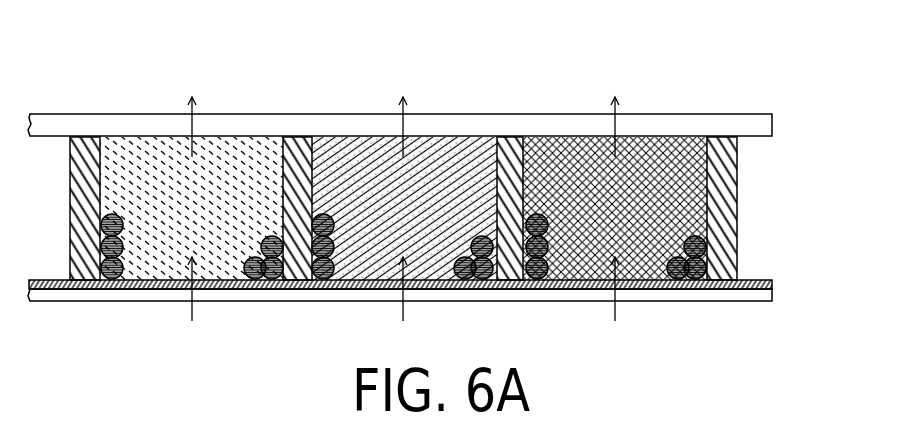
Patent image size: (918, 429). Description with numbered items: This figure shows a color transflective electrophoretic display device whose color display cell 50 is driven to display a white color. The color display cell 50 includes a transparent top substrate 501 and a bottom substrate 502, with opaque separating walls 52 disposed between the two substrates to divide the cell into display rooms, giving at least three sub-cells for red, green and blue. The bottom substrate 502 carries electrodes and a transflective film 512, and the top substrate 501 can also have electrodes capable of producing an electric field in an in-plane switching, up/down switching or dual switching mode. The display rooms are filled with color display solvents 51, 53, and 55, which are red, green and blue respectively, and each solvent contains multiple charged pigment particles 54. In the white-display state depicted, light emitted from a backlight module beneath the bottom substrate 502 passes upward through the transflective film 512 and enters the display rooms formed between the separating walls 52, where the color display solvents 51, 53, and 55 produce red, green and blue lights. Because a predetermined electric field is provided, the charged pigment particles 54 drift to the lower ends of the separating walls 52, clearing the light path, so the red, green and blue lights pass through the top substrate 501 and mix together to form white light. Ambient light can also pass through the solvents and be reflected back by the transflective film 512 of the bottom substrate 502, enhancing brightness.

The color display cell 50 is at (146, 21).
The color display solvent 51 is at (233, 168).
The separating walls 52 is at (736, 221).
The color display solvent 53 is at (446, 165).
The charged pigment particles 54 is at (694, 278).
The color display solvent 55 is at (657, 165).
The transparent top substrate 501 is at (766, 124).
The bottom substrate 502 is at (752, 296).
The transflective film 512 is at (772, 282).